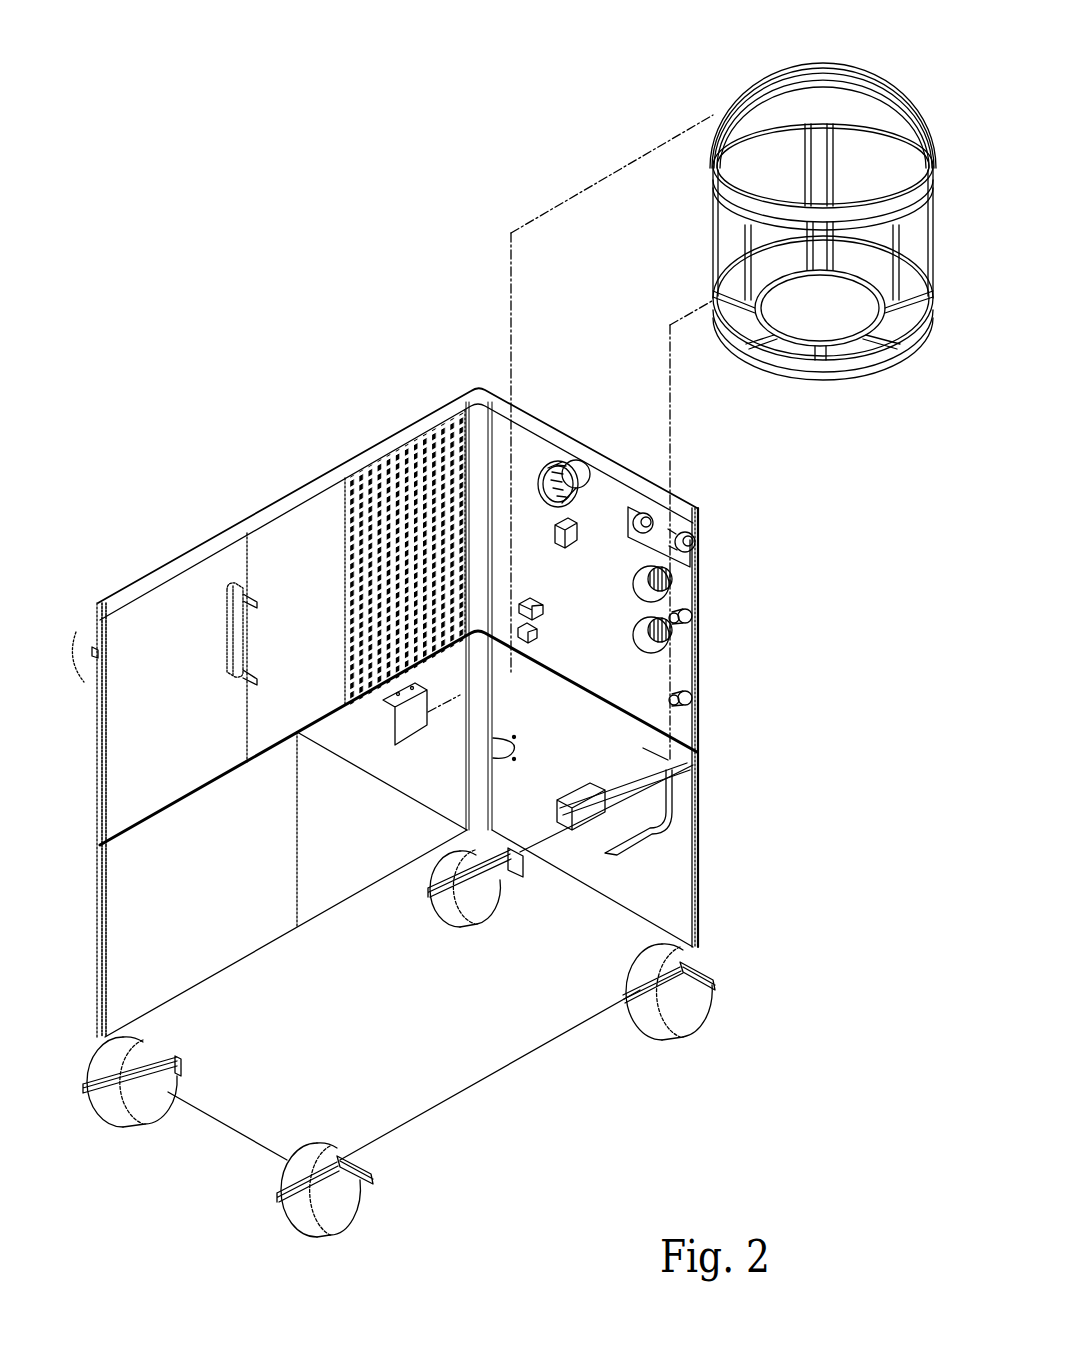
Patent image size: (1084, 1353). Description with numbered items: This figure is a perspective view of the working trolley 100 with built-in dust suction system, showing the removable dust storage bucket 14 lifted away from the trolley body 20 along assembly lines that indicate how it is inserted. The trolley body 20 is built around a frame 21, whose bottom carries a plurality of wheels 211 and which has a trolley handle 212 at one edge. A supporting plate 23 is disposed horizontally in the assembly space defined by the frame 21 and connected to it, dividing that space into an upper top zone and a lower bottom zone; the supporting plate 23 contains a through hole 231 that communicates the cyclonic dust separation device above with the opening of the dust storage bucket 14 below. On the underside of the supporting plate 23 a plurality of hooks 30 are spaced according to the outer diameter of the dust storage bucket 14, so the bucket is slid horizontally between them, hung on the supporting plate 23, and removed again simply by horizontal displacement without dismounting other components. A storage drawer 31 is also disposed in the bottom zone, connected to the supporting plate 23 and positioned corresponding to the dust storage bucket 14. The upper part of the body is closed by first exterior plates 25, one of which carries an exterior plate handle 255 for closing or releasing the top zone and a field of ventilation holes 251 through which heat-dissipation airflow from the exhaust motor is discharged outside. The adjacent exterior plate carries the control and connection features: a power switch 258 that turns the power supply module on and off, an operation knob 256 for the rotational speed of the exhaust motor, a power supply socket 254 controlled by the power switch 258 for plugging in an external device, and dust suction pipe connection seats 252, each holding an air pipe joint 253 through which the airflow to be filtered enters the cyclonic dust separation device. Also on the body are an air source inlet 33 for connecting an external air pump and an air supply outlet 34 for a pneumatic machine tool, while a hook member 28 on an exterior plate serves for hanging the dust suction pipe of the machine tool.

The working trolley 100 is at (272, 52).
The dust storage bucket 14 is at (740, 165).
The trolley body 20 is at (343, 452).
The frame 21 is at (280, 498).
The supporting plate 23 is at (640, 745).
The first exterior plates 25 is at (160, 600).
The hook member 28 is at (625, 830).
The hooks 30 is at (567, 857).
The storage drawer 31 is at (210, 965).
The air source inlet 33 is at (692, 698).
The air supply outlet 34 is at (692, 616).
The wheels 211 is at (375, 1192).
The trolley handle 212 is at (92, 682).
The through hole 231 is at (500, 760).
The ventilation holes 251 is at (413, 475).
The dust suction pipe connection seat 252 is at (700, 535).
The air pipe joint 253 is at (670, 612).
The power supply socket 254 is at (632, 507).
The exterior plate handle 255 is at (235, 590).
The operation knob 256 is at (578, 470).
The power switch 258 is at (552, 468).